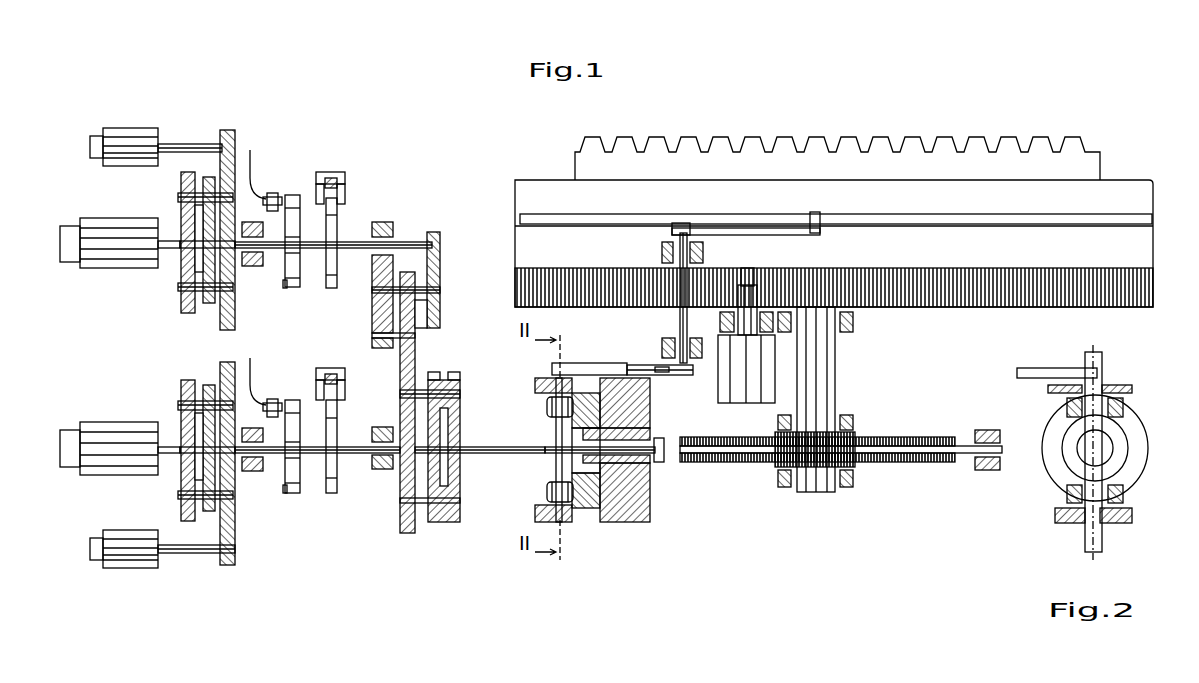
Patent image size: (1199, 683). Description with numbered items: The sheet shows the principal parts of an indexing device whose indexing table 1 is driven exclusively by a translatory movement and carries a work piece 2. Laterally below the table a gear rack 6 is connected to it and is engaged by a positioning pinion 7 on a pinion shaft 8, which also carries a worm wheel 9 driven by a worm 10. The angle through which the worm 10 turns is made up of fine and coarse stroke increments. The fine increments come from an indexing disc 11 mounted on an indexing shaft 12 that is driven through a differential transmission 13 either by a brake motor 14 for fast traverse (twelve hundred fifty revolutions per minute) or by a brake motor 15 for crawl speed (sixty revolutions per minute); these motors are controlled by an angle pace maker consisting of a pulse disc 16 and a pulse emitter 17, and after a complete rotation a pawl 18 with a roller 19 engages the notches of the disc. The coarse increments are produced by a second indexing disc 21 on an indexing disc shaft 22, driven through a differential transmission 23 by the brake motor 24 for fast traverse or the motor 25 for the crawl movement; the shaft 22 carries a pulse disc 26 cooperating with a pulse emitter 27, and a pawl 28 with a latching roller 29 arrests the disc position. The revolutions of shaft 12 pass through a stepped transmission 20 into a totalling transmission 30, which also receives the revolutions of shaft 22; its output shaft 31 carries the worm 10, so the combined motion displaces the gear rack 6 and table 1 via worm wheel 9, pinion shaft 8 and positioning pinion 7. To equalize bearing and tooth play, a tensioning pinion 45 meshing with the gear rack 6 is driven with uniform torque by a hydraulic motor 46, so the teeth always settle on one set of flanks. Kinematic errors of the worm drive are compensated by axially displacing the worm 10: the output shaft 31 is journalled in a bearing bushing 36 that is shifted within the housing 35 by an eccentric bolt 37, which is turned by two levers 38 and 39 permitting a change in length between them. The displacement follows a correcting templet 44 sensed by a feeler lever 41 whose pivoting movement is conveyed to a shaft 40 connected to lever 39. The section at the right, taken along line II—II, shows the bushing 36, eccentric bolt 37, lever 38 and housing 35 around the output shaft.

In FIG. 1, the indexing table 1 is at (1109, 196).
In FIG. 1, the work piece 2 is at (880, 141).
In FIG. 1, the gear rack 6 is at (950, 306).
In FIG. 1, the positioning pinion 7 is at (832, 290).
In FIG. 1, the pinion shaft 8 is at (832, 378).
In FIG. 1, the worm wheel 9 is at (898, 465).
In FIG. 1, the worm 10 is at (780, 468).
In FIG. 1, the indexing disc 11 is at (336, 241).
In FIG. 1, the indexing shaft 12 is at (413, 241).
In FIG. 1, the differential transmission 13 is at (205, 185).
In FIG. 1, the brake motor 14 is at (113, 230).
In FIG. 1, the brake motor 15 is at (126, 136).
In FIG. 1, the pulse disc 16 is at (292, 200).
In FIG. 1, the pulse emitter 17 is at (272, 193).
In FIG. 1, the pawl 18 is at (320, 178).
In FIG. 1, the roller 19 is at (346, 192).
In FIG. 1, the stepped transmission 20 is at (420, 332).
In FIG. 1, the indexing disc 21 is at (330, 495).
In FIG. 1, the indexing disc shaft 22 is at (350, 455).
In FIG. 1, the differential transmission 23 is at (205, 525).
In FIG. 1, the brake motor 24 is at (128, 432).
In FIG. 1, the motor 25 is at (130, 541).
In FIG. 1, the pulse disc 26 is at (292, 495).
In FIG. 1, the sensor 27 is at (272, 400).
In FIG. 1, the pawl 28 is at (320, 375).
In FIG. 1, the latching roller 29 is at (335, 372).
In FIG. 1, the totalling transmission 30 is at (440, 465).
In FIG. 1, the output shaft 31 is at (497, 446).
In FIG. 1, the housing 35 is at (655, 498).
In FIG. 2, the housing 35 is at (1125, 388).
In FIG. 1, the bearing bushing 36 is at (596, 511).
In FIG. 2, the bearing bushing 36 is at (1125, 408).
In FIG. 1, the eccentric bolt 37 is at (545, 495).
In FIG. 2, the eccentric bolt 37 is at (1065, 410).
In FIG. 1, the lever 38 is at (590, 364).
In FIG. 2, the lever 38 is at (1068, 367).
In FIG. 1, the lever 39 is at (646, 366).
In FIG. 1, the shaft 40 is at (682, 320).
In FIG. 1, the feeler lever 41 is at (768, 228).
In FIG. 1, the correcting templet 44 is at (1000, 224).
In FIG. 1, the tensioning pinion 45 is at (748, 285).
In FIG. 1, the hydraulic motor 46 is at (725, 390).